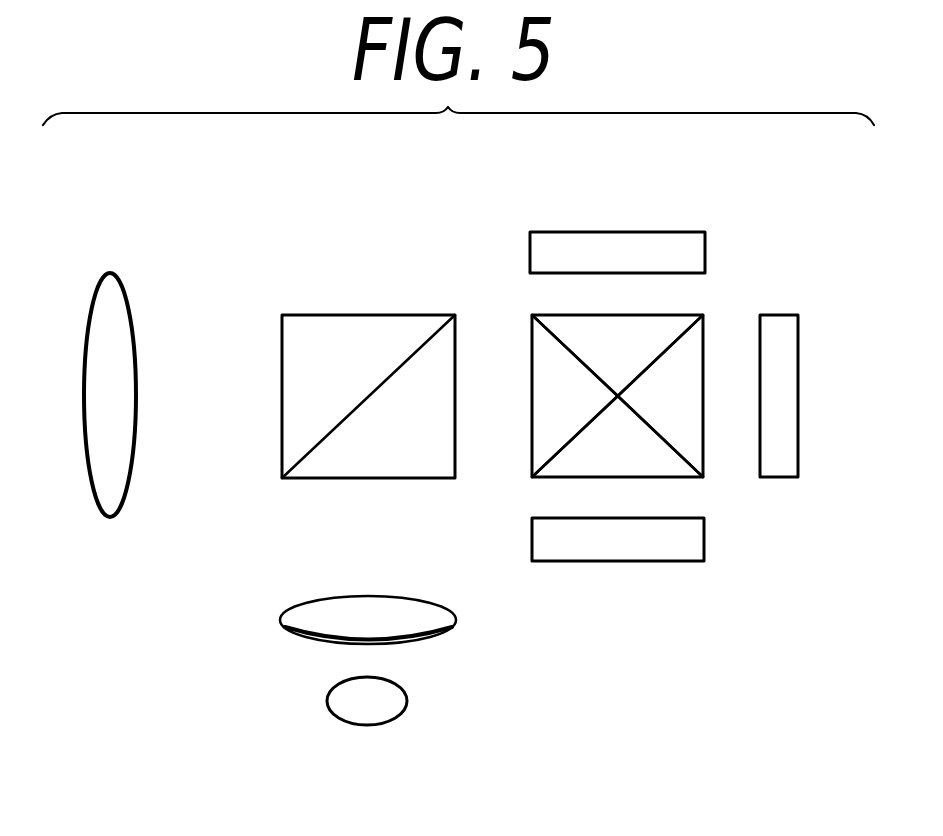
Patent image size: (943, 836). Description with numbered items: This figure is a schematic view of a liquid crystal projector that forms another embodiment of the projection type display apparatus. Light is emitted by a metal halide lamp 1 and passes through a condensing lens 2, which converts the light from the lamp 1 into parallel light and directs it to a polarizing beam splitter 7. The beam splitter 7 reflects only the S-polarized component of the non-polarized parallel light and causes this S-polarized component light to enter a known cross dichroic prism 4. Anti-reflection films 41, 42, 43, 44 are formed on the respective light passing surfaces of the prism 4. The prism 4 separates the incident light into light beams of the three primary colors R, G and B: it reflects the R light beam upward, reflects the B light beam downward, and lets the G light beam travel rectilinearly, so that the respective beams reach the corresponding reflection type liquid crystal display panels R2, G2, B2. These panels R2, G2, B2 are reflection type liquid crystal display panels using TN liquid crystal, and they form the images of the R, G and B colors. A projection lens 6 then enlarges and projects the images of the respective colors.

The metal halide lamp 1 is at (400, 718).
The condensing lens 2 is at (452, 633).
The projection lens 6 is at (119, 509).
The polarizing beam splitter 7 is at (375, 314).
The cross dichroic prism 4 is at (704, 321).
The anti-reflection film 41 is at (686, 313).
The anti-reflection film 42 is at (706, 455).
The anti-reflection film 43 is at (540, 480).
The anti-reflection film 44 is at (523, 345).
The reflection type liquid crystal display panel R2 is at (627, 232).
The reflection type liquid crystal display panel G2 is at (800, 370).
The reflection type liquid crystal display panel B2 is at (678, 562).